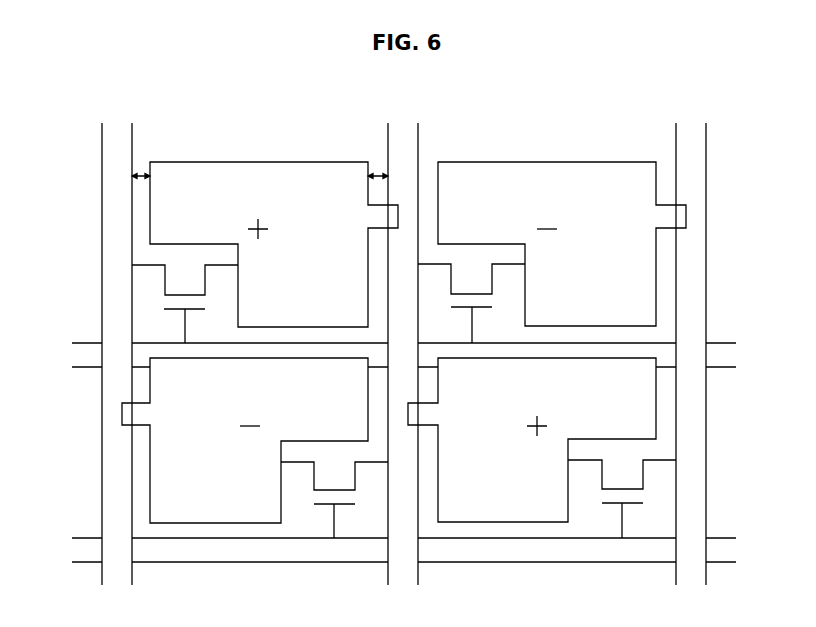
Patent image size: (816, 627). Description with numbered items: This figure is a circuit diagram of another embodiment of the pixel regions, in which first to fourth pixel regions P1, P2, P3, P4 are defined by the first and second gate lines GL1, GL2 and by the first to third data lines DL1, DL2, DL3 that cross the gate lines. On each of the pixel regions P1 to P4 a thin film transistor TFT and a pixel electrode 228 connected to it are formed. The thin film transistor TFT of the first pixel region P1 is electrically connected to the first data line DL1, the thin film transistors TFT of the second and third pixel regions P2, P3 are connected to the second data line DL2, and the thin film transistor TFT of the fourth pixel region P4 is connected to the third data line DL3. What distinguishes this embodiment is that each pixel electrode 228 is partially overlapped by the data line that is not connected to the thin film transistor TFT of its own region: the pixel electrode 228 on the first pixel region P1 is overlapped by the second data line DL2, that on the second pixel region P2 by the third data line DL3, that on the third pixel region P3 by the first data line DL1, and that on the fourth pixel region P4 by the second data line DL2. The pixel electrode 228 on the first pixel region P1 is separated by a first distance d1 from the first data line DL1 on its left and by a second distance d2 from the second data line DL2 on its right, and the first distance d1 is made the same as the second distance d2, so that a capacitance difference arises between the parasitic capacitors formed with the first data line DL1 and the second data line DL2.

The pixel electrode 228 is at (220, 244).
The thin film transistor TFT is at (153, 301).
The first data line DL1 is at (116, 343).
The second data line DL2 is at (402, 343).
The third data line DL3 is at (690, 343).
The first gate line GL1 is at (384, 355).
The second gate line GL2 is at (384, 550).
The first pixel region P1 is at (160, 208).
The second pixel region P2 is at (562, 244).
The third pixel region P3 is at (245, 440).
The fourth pixel region P4 is at (532, 440).
The first distance d1 is at (140, 172).
The second distance d2 is at (380, 172).